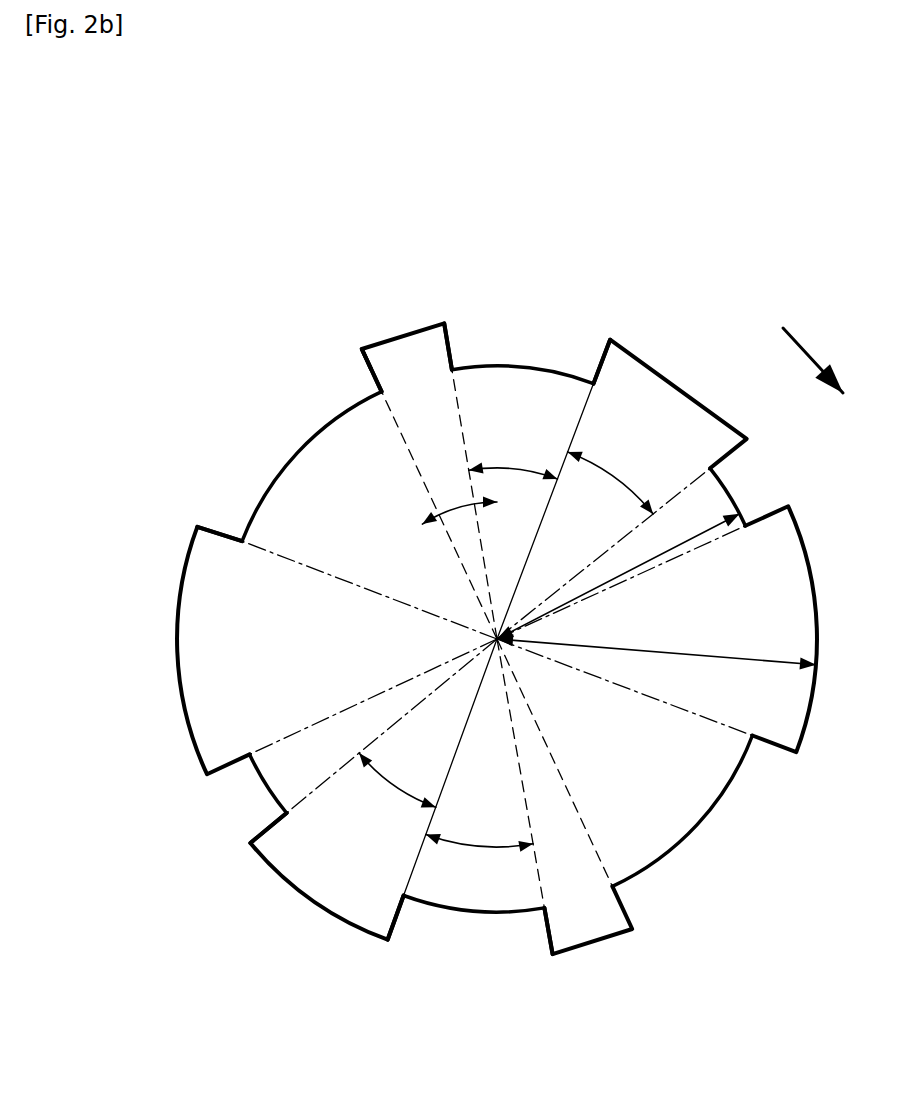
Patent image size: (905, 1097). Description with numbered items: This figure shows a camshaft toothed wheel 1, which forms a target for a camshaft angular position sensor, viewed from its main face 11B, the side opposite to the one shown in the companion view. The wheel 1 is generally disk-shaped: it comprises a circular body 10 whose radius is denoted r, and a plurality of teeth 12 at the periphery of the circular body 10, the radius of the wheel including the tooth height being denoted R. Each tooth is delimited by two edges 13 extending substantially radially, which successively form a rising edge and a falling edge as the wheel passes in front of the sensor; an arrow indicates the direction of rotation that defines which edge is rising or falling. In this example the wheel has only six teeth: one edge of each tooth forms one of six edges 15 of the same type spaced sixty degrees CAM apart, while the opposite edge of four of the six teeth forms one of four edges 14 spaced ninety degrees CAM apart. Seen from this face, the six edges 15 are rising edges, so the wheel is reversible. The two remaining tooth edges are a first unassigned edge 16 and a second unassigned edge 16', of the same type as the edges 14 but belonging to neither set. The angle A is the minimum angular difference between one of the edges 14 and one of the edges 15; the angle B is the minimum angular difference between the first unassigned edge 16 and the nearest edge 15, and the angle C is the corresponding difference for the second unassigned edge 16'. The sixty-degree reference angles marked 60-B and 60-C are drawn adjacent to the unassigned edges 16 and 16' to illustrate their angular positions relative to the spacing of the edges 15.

The camshaft toothed wheel 1 is at (278, 953).
The circular body 10 is at (657, 802).
The main face 11B is at (260, 627).
The teeth 12 is at (414, 347).
The edges 13 is at (380, 387).
The edges spaced 90° CAM apart 14 is at (366, 357).
The edges spaced 60° CAM apart 15 is at (450, 347).
The first unassigned edge 16 is at (416, 966).
The second unassigned edge 16' is at (586, 310).
The angular spacing B 60-B is at (394, 789).
The angular spacing C 60-C is at (633, 478).
The minimum angular difference A is at (455, 503).
The minimum angular difference B is at (479, 827).
The minimum angular difference C is at (513, 452).
The radius of the wheel R is at (656, 641).
The radius of the circular body r is at (618, 576).